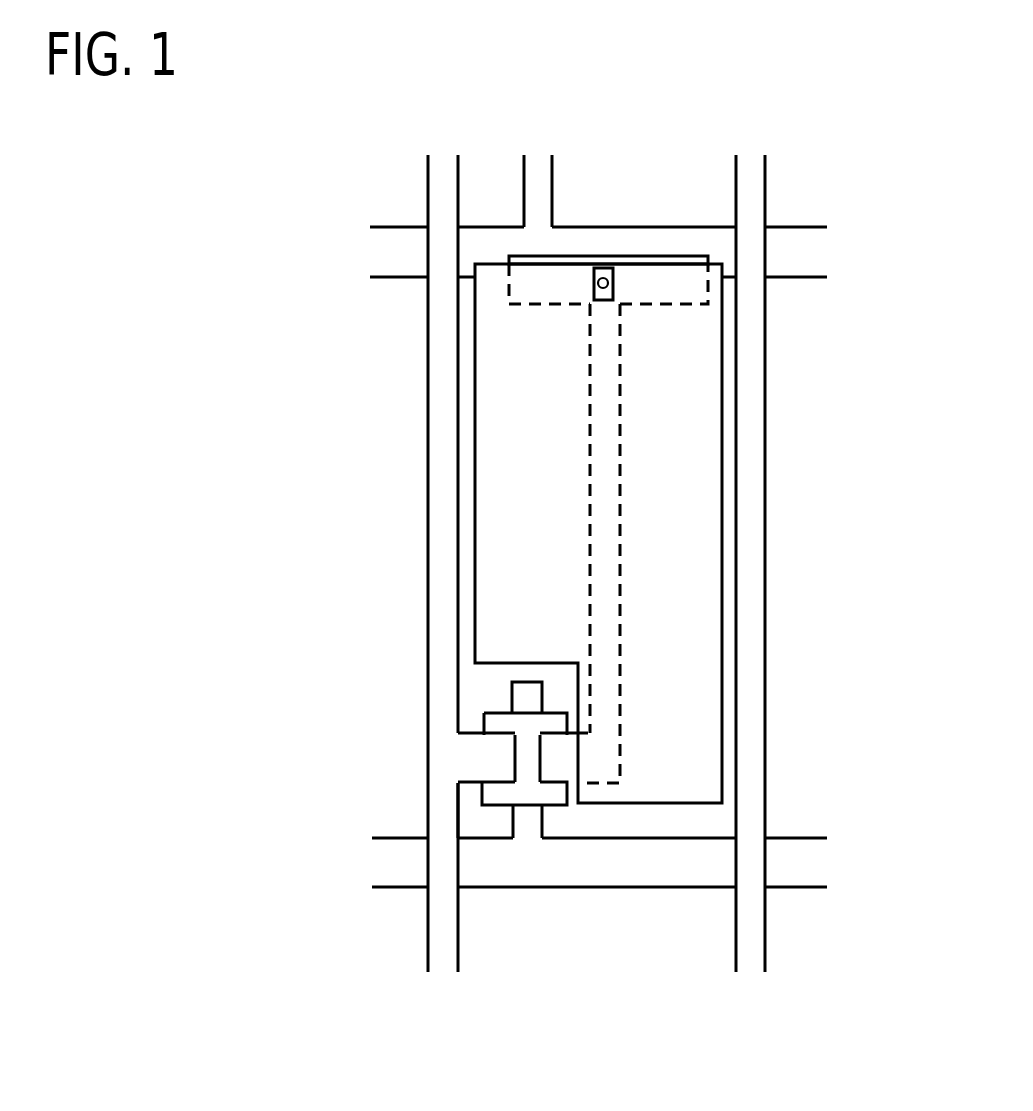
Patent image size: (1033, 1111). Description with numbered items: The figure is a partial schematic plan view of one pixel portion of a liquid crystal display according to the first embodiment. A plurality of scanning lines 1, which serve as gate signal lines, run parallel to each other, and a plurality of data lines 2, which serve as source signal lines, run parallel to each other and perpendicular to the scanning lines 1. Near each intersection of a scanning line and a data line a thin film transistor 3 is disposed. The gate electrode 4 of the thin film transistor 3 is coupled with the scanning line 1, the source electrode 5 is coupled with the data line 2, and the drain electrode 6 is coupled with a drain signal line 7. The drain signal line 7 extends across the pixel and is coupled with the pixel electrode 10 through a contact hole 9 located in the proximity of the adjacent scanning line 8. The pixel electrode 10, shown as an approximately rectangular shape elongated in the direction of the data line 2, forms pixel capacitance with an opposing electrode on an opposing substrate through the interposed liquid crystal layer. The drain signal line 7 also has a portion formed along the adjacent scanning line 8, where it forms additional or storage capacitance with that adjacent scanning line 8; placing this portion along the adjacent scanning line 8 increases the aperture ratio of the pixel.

The scanning line 1 is at (693, 870).
The data line 2 is at (440, 926).
The thin film transistor 3 is at (496, 820).
The gate electrode 4 is at (527, 830).
The source electrode 5 is at (502, 755).
The drain electrode 6 is at (551, 767).
The drain signal line 7 is at (608, 588).
The adjacent scanning line 8 is at (798, 262).
The contact hole 9 is at (605, 277).
The pixel electrode 10 is at (683, 497).